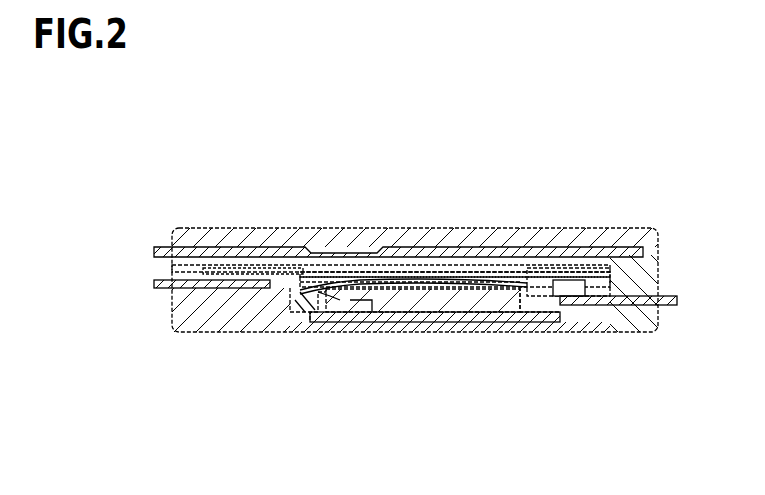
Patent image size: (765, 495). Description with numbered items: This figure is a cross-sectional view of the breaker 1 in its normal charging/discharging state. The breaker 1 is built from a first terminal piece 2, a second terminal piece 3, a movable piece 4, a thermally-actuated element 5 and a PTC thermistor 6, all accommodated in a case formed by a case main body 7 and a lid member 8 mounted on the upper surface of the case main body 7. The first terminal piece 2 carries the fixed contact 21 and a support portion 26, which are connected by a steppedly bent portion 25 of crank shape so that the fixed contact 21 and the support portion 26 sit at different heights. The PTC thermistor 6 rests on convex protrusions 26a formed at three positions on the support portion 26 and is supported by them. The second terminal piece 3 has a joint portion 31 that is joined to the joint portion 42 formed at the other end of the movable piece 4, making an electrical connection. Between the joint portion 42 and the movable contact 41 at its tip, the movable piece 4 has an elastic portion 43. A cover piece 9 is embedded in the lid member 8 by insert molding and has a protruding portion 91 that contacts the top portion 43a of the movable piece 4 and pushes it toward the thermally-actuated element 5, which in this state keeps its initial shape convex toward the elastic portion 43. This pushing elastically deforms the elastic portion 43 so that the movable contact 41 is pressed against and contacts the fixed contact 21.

The breaker 1 is at (669, 147).
The first terminal piece 2 is at (540, 333).
The second terminal piece 3 is at (185, 295).
The movable piece 4 is at (521, 246).
The thermally-actuated element 5 is at (485, 328).
The PTC thermistor 6 is at (408, 300).
The case main body 7 is at (280, 305).
The lid member 8 is at (300, 266).
The cover piece 9 is at (408, 255).
The fixed contact 21 is at (622, 306).
The steppedly bent portion 25 is at (565, 297).
The support portion 26 is at (455, 318).
The protrusions 26a is at (362, 303).
The joint portion 31 is at (221, 289).
The movable contact 41 is at (595, 297).
The joint portion 42 is at (228, 268).
The elastic portion 43 is at (459, 279).
The top portion 43a is at (323, 300).
The protruding portion 91 is at (357, 273).